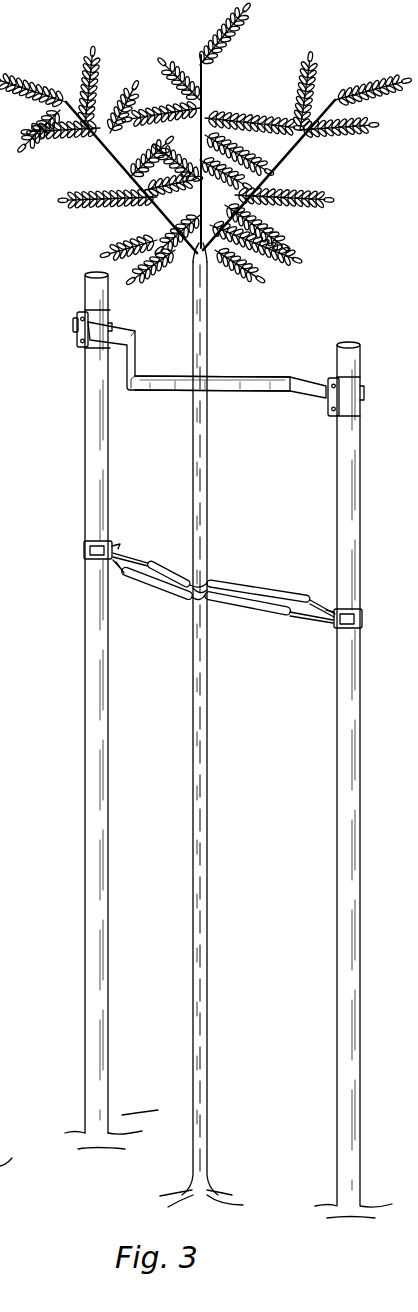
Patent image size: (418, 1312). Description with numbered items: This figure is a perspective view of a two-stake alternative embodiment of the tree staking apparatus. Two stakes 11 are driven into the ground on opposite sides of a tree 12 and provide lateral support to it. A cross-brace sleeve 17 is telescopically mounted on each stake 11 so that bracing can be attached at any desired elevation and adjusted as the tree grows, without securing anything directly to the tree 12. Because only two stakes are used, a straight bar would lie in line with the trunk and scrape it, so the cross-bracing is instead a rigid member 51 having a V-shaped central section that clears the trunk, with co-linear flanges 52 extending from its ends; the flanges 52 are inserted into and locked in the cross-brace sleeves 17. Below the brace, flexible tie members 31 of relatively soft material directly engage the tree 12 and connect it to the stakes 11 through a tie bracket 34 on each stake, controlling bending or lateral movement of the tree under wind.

The stakes 11 is at (98, 845).
The tree 12 is at (203, 506).
The cross-brace sleeve 17 is at (82, 312).
The flexible tie members 31 is at (256, 578).
The tie bracket 34 is at (83, 543).
The rigid member 51 is at (266, 402).
The co-linear flanges 52 is at (127, 330).